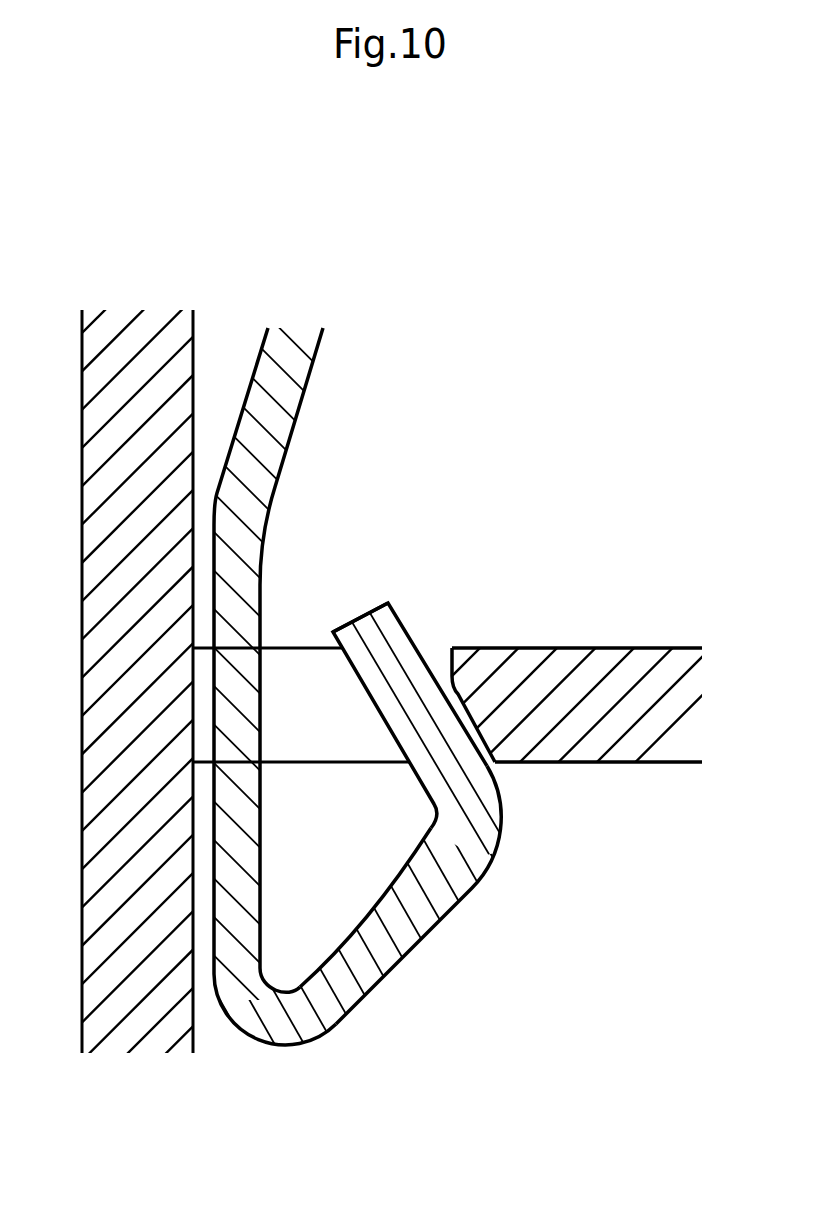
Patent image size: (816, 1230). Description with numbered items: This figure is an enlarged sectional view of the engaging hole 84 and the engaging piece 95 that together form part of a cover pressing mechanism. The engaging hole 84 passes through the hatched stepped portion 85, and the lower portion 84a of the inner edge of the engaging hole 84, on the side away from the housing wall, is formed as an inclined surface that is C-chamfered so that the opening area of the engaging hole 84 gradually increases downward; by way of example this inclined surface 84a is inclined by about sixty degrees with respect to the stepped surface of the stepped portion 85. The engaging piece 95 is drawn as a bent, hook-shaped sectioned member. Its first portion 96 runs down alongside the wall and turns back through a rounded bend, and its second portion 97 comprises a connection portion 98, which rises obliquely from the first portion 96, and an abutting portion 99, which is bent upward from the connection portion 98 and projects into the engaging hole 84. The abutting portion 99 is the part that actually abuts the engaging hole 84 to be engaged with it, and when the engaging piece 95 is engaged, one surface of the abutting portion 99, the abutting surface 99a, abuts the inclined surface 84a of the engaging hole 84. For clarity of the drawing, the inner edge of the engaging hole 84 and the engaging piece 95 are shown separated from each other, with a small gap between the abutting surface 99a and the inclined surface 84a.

The engaging hole 84 is at (323, 708).
The lower portion of the inner edge of the engaging hole 84a is at (455, 692).
The stepped portion 85 is at (642, 663).
The engaging piece 95 is at (424, 1042).
The first portion 96 is at (248, 895).
The second portion 97 is at (413, 796).
The connection portion 98 is at (460, 877).
The abutting portion 99 is at (473, 774).
The abutting surface 99a is at (438, 690).